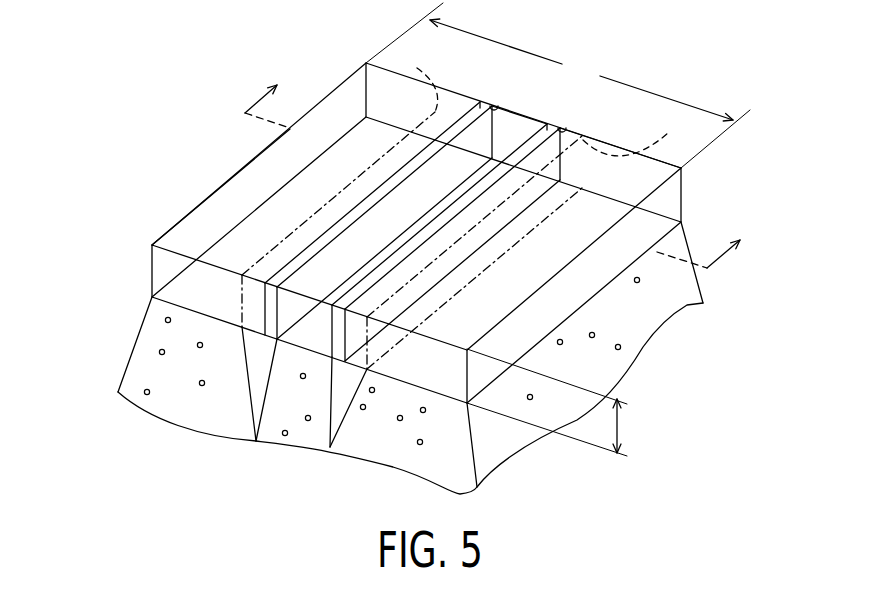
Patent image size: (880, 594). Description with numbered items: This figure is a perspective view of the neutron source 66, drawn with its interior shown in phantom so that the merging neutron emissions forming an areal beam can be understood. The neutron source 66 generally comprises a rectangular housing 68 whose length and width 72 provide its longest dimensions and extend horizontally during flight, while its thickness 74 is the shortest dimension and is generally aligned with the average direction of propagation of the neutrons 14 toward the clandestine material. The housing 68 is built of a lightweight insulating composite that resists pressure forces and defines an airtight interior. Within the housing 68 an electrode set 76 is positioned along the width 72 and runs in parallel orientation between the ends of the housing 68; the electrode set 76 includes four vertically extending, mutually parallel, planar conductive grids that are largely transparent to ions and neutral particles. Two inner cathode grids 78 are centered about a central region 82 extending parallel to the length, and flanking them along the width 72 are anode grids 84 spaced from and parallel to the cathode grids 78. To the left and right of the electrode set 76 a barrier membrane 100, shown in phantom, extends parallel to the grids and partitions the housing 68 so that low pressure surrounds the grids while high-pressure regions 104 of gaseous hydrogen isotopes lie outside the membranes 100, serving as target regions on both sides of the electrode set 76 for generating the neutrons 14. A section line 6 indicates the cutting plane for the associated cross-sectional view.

The section line 6- 6 is at (500, 165).
The neutrons 14 is at (160, 351).
The neutron source 66 is at (406, 263).
The rectangular housing 68 is at (150, 262).
The width 72 is at (558, 85).
The thickness 74 is at (620, 424).
The electrode set 76 is at (512, 103).
The cathode grids 78 is at (496, 107).
The central region 82 is at (320, 328).
The anode grids 84 is at (479, 103).
The barrier membrane 100 is at (466, 204).
The high-pressure regions 104 is at (247, 198).